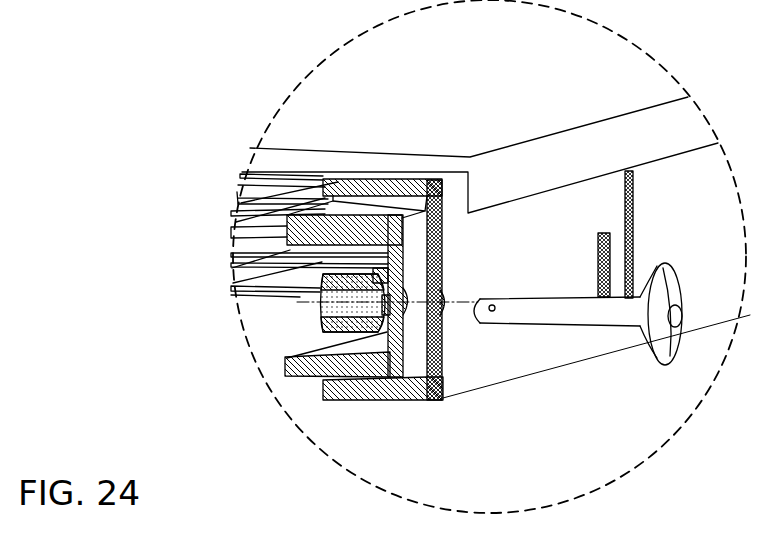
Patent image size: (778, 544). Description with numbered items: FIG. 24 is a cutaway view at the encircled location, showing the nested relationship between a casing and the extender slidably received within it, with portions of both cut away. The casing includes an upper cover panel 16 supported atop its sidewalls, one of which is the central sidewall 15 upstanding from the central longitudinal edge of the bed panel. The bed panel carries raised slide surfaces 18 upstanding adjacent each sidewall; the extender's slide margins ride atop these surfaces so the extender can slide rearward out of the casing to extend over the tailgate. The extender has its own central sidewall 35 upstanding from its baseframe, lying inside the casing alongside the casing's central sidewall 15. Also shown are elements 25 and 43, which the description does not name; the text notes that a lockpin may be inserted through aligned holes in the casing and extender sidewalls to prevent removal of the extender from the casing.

The central sidewall 15 is at (588, 335).
The upper cover panel 16 is at (463, 101).
The raised slide surfaces 18 is at (383, 398).
The pin 25 is at (438, 313).
The central sidewall 35 is at (415, 347).
The knob 43 is at (402, 310).